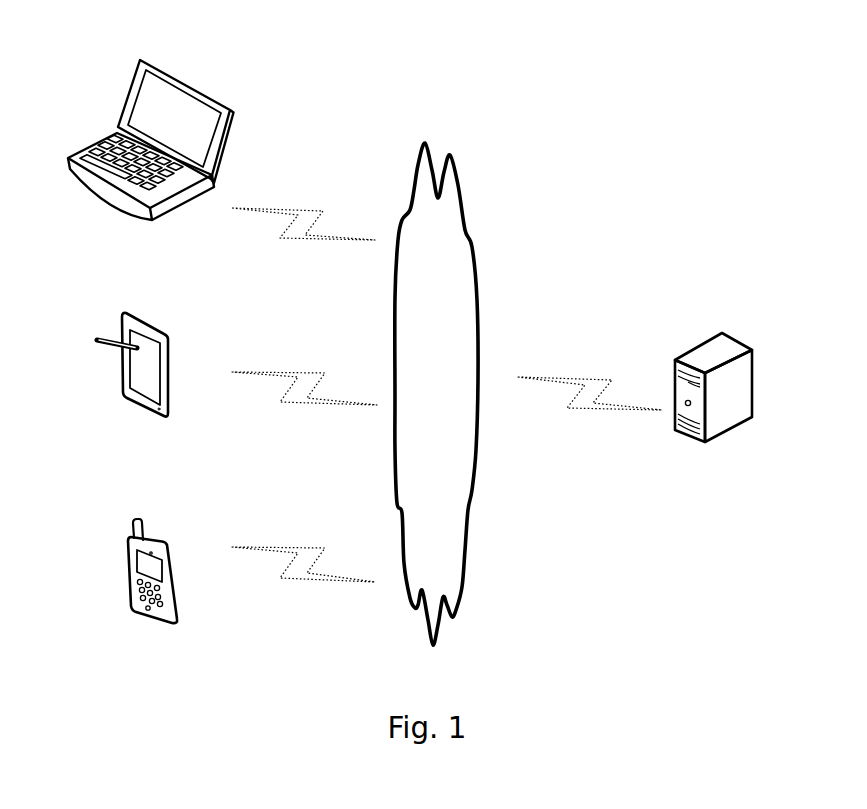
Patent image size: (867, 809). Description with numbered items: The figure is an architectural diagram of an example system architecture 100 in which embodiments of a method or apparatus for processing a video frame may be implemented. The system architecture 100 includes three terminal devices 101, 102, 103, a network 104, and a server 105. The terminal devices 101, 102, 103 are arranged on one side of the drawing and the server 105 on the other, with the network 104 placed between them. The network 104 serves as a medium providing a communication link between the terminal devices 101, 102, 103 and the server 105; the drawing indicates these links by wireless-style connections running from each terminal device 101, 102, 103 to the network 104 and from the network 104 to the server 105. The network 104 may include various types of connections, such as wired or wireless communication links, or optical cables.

The system architecture 100 is at (688, 50).
The terminal device 101 is at (152, 592).
The terminal device 102 is at (132, 384).
The terminal device 103 is at (151, 159).
The network 104 is at (436, 394).
The server 105 is at (713, 404).